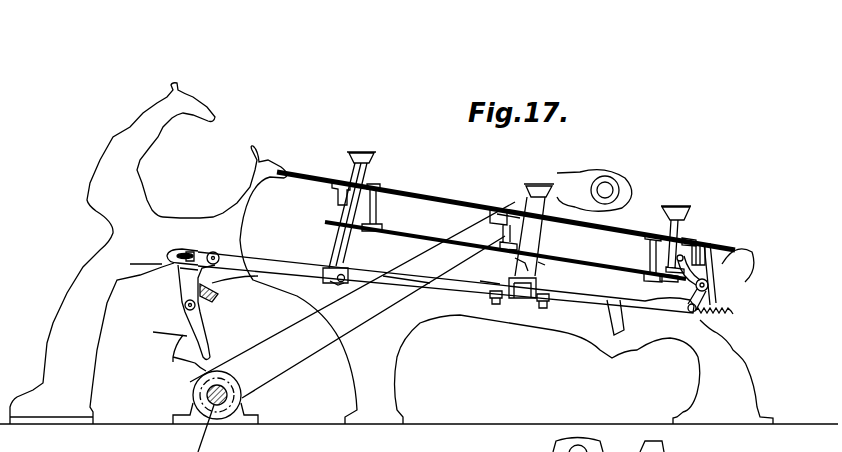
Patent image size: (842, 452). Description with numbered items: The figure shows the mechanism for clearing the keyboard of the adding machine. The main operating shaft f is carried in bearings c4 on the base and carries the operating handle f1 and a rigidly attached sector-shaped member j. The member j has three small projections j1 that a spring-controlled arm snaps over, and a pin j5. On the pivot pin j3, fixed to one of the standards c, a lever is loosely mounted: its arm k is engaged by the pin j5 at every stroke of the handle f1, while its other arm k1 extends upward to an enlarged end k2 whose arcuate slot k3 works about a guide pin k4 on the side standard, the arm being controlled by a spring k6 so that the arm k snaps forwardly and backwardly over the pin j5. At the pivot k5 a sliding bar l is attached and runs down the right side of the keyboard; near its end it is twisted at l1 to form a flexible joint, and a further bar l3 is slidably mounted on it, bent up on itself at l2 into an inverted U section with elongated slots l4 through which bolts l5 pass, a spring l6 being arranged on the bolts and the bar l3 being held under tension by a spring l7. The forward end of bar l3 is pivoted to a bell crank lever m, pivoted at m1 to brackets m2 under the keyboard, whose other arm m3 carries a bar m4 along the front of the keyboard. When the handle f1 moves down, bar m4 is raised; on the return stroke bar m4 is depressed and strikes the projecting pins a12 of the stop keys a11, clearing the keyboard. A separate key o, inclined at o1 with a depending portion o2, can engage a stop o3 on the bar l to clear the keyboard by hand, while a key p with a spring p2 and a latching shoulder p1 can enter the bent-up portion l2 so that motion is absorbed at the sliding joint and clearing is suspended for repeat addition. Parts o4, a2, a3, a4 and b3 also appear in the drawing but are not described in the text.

The standard c is at (147, 111).
The bearing c4 is at (247, 398).
The main operating shaft f is at (229, 387).
The operating handle f1 is at (297, 363).
The member j is at (183, 357).
The small projection j1 is at (157, 333).
The pivot pin j3 is at (185, 304).
The pin j5 is at (190, 364).
The arm k is at (213, 340).
The arm k1 is at (185, 275).
The enlarged upper end k2 is at (168, 258).
The arcuate slot k3 is at (180, 251).
The guide pin k4 is at (190, 253).
The pivot k5 is at (214, 252).
The spring k6 is at (220, 295).
The sliding bar l is at (295, 268).
The twisted portion l1 is at (423, 277).
The bent-up portion l2 is at (528, 278).
The bar l3 is at (600, 313).
The elongated slot l4 is at (487, 280).
The bolt l5 is at (541, 304).
The spring l6 is at (493, 301).
The spring l7 is at (728, 321).
The key o is at (371, 160).
The inclined portion o1 is at (345, 275).
The depending portion o2 is at (336, 273).
The stop o3 is at (345, 282).
The middle bar o4 is at (376, 197).
The key p is at (539, 194).
The shoulder p1 is at (523, 210).
The spring p2 is at (497, 213).
The post a2 is at (657, 244).
The upper bar a3 is at (410, 236).
The bracket a4 is at (683, 241).
The stop key a11 is at (686, 212).
The projecting pin a12 is at (664, 261).
The link b3 is at (510, 261).
The bell crank lever m is at (700, 300).
The pivot m1 is at (710, 286).
The bracket m2 is at (712, 270).
The arm m3 is at (712, 257).
The bar m4 is at (712, 246).